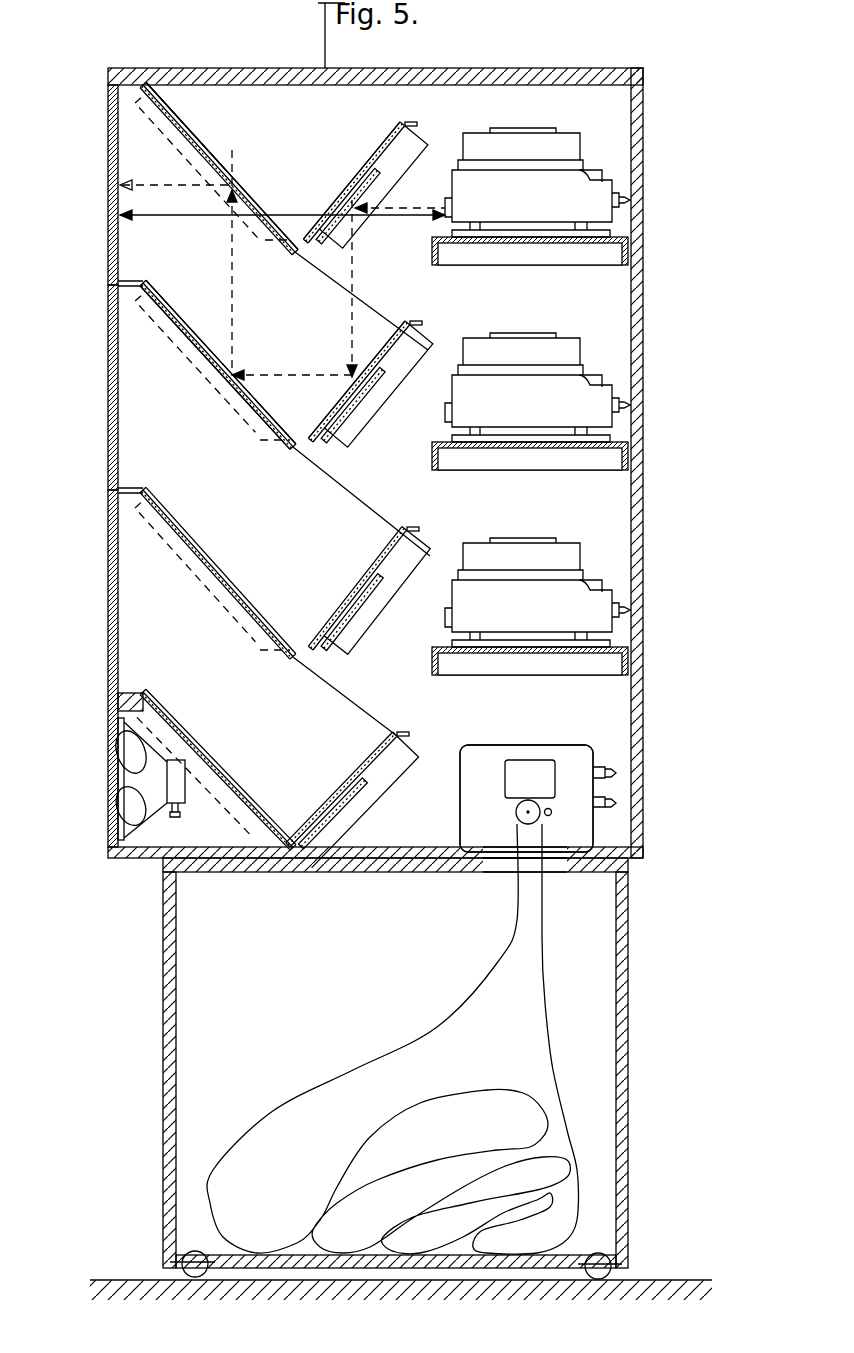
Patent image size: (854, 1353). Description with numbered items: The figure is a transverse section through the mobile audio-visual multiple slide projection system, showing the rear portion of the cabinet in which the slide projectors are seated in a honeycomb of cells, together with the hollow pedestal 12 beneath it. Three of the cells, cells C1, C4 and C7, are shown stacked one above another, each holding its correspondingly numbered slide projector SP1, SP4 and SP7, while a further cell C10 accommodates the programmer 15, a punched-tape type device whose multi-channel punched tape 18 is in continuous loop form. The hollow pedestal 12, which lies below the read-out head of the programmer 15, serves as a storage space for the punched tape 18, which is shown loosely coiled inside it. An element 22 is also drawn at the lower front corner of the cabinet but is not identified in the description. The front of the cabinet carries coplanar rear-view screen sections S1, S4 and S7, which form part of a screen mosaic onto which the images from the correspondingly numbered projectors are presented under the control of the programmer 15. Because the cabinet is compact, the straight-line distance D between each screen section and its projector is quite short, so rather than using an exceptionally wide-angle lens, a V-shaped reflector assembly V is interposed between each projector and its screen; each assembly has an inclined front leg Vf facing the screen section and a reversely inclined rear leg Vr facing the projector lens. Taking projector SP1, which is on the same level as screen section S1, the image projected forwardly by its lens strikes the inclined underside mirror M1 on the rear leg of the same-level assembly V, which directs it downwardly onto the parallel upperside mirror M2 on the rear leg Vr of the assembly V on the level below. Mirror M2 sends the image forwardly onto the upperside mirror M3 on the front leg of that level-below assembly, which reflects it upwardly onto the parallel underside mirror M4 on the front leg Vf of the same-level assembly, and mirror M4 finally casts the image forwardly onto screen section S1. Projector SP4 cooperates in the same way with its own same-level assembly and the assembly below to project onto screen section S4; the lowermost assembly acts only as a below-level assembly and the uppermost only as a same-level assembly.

The hollow pedestal 12 is at (630, 997).
The programmer 15 is at (568, 755).
The punched tape 18 is at (547, 1005).
The speaker 22 is at (158, 813).
The screen section S1 is at (115, 132).
The screen section S4 is at (115, 382).
The screen section S7 is at (115, 578).
The cell C1 is at (548, 113).
The cell C4 is at (531, 377).
The cell C7 is at (531, 579).
The cell C10 is at (550, 709).
The slide projector SP1 is at (608, 188).
The slide projector SP4 is at (600, 392).
The slide projector SP7 is at (600, 597).
The underside mirror M1 is at (350, 425).
The upperside mirror M2 is at (330, 393).
The upperside mirror M3 is at (185, 328).
The underside mirror M4 is at (205, 147).
The V-shaped reflector assembly V is at (254, 180).
The front leg Vf is at (202, 122).
The rear leg Vr is at (358, 142).
The straight line distance D is at (282, 265).